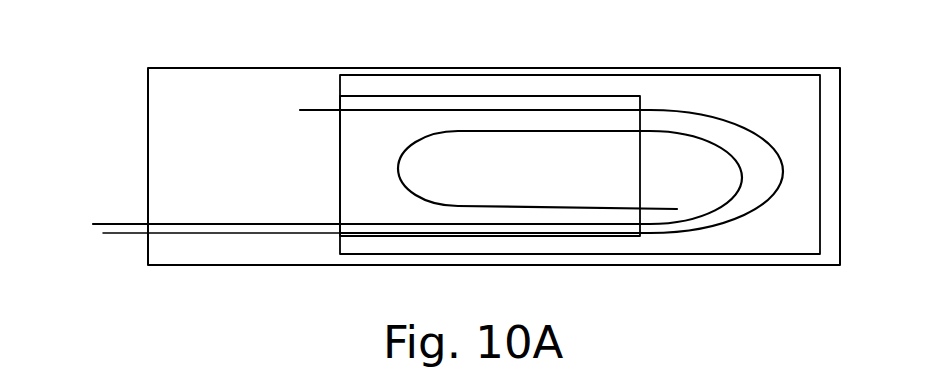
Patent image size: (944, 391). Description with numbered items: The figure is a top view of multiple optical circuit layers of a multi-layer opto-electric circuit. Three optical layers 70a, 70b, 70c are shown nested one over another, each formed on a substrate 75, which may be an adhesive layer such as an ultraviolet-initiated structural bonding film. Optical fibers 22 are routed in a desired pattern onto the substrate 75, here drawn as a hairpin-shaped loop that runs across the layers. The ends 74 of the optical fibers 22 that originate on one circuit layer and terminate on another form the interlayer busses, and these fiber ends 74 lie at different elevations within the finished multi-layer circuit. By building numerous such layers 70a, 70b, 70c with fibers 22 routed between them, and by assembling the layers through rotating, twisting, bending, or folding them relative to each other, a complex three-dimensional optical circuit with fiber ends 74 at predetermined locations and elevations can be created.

The optical layer 70a is at (270, 63).
The optical layer 70b is at (795, 107).
The optical layer 70c is at (537, 171).
The optical fiber ends 74 is at (93, 229).
The substrate 75 is at (363, 150).
The optical fibers 22 is at (188, 234).